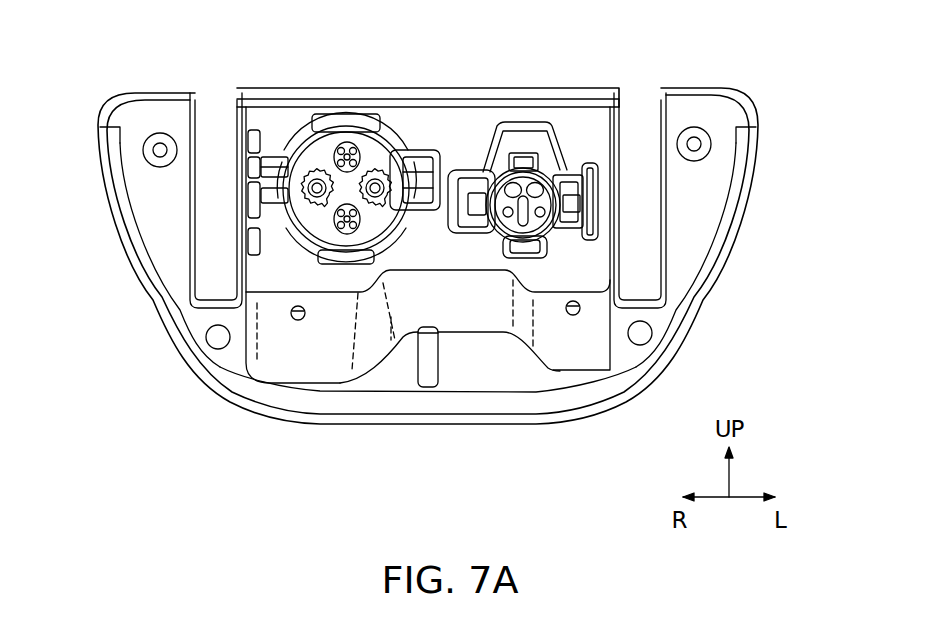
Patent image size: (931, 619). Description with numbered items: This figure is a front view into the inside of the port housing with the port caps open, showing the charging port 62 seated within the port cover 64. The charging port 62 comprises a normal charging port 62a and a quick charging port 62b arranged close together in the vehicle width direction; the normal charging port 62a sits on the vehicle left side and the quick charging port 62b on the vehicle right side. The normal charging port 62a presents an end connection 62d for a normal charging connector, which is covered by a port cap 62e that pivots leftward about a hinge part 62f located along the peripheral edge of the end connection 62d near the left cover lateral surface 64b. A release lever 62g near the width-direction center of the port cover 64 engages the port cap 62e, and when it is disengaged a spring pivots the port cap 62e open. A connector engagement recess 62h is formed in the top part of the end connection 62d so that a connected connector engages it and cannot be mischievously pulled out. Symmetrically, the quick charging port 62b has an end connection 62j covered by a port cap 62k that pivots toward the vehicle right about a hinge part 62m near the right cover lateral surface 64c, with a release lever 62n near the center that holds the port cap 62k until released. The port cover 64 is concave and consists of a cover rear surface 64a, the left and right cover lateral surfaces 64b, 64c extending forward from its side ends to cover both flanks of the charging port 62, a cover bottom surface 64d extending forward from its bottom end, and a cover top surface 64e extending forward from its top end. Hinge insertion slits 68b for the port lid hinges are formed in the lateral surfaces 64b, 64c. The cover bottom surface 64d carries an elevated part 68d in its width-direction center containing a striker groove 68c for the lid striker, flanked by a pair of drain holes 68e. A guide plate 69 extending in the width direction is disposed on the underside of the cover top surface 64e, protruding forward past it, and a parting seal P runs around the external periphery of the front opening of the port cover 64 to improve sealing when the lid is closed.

The charging port 62 is at (433, 43).
The normal charging port 62a is at (500, 163).
The quick charging port 62b is at (305, 127).
The end connection 62d is at (538, 237).
The port cap 62e is at (600, 207).
The hinge part 62f is at (577, 168).
The release lever 62g is at (458, 170).
The connector engagement recess 62h is at (524, 157).
The end connection 62j is at (330, 218).
The port cap 62k is at (267, 130).
The hinge part 62m is at (277, 213).
The release lever 62n is at (419, 197).
The port cover 64 is at (720, 142).
The cover rear surface 64a is at (600, 150).
The left cover lateral surface 64b is at (600, 266).
The right cover lateral surface 64c is at (237, 280).
The cover bottom surface 64d is at (555, 343).
The cover top surface 64e is at (553, 90).
The hinge insertion slit 68b is at (200, 207).
The striker groove 68c is at (430, 385).
The elevated part 68d is at (477, 322).
The drain hole 68e is at (292, 320).
The guide plate 69 is at (587, 105).
The parting seal P is at (608, 387).